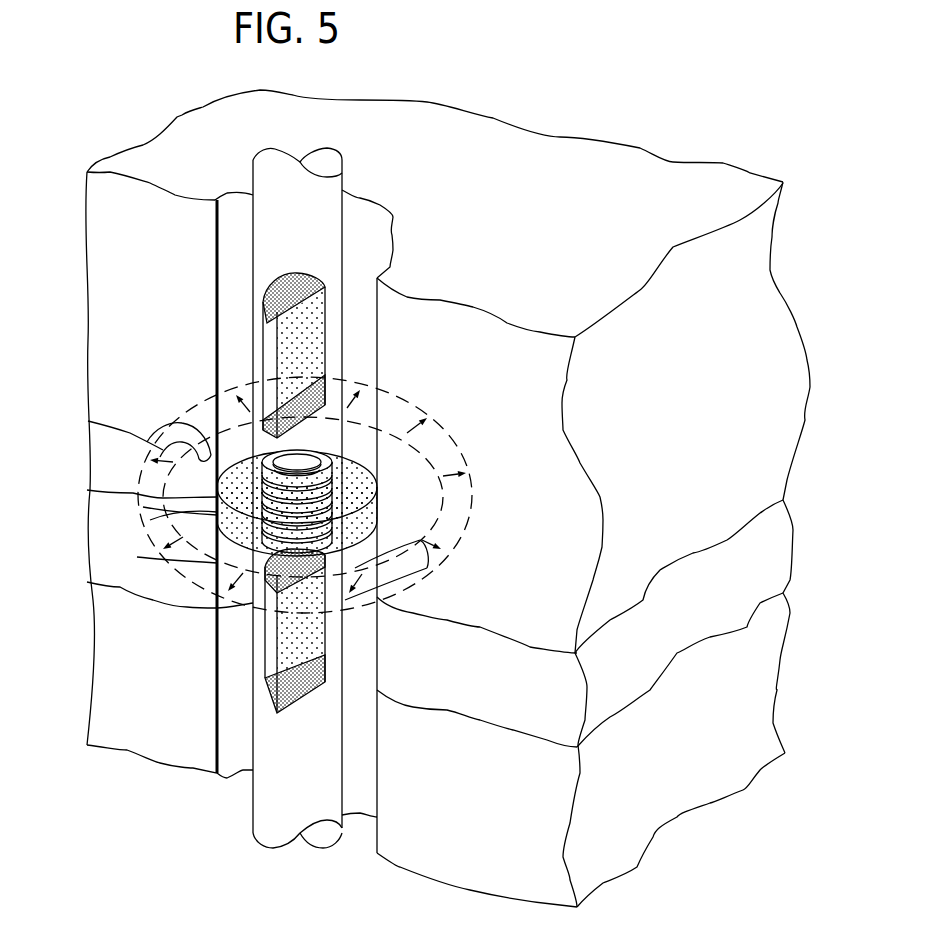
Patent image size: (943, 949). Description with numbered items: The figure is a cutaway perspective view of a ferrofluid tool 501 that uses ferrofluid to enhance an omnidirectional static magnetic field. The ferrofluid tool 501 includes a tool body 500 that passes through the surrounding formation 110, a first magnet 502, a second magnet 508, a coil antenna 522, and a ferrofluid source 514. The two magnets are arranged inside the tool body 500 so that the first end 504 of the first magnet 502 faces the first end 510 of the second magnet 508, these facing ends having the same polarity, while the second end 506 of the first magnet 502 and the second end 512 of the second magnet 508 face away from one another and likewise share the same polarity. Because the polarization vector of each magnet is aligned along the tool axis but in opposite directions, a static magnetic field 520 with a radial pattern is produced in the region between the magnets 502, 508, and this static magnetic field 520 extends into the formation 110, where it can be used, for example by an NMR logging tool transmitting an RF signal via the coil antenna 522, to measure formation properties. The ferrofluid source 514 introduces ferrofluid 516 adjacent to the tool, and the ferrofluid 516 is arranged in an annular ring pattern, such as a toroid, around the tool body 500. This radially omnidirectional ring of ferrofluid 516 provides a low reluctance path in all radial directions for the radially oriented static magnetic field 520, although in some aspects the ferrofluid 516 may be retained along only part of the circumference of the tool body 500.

The formation 110 is at (182, 115).
The ferrofluid tool 501 is at (425, 88).
The tool body 500 is at (343, 186).
The first magnet 502 is at (272, 355).
The first end of the first magnet 504 is at (320, 393).
The second end of the first magnet 506 is at (264, 322).
The second magnet 508 is at (267, 650).
The first end of the second magnet 510 is at (264, 603).
The second end of the second magnet 512 is at (267, 694).
The ferrofluid source 514 is at (145, 462).
The ferrofluid 516 is at (362, 468).
The static magnetic field 520 is at (153, 526).
The coil antenna 522 is at (267, 460).